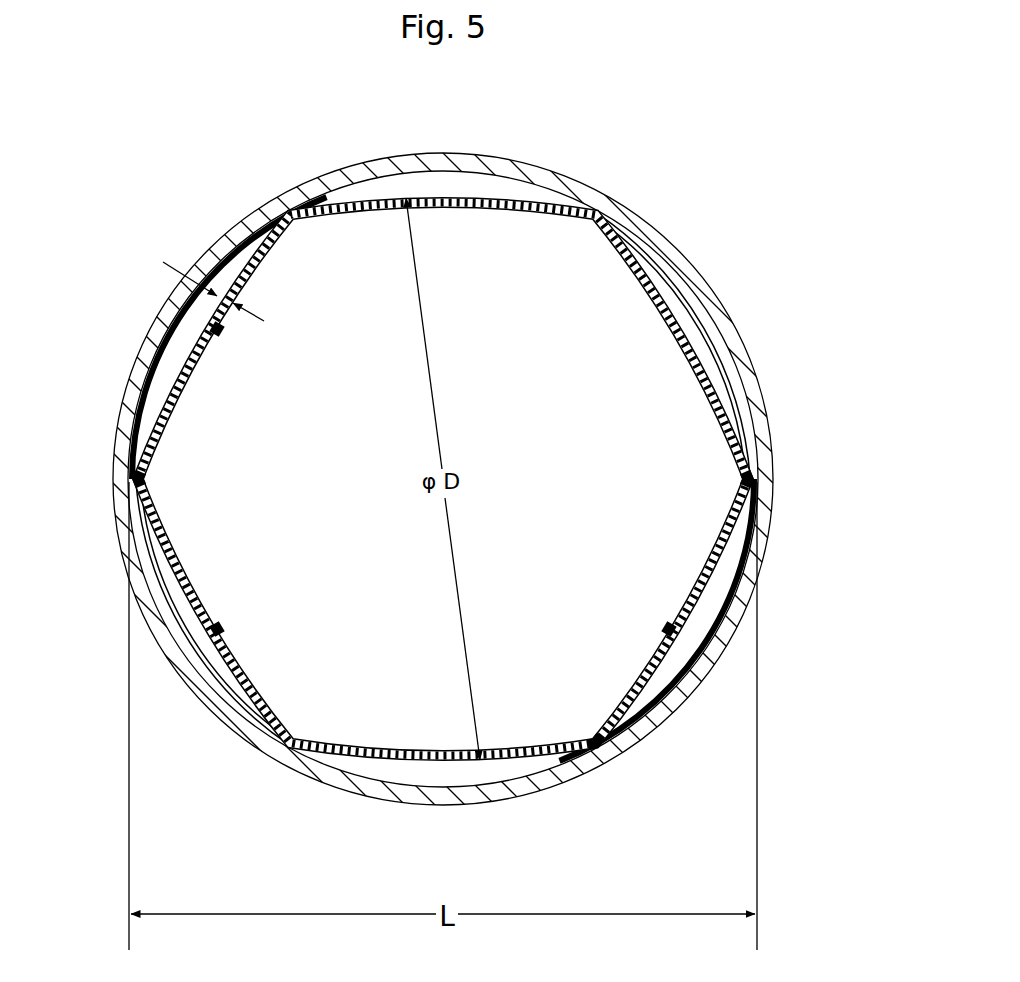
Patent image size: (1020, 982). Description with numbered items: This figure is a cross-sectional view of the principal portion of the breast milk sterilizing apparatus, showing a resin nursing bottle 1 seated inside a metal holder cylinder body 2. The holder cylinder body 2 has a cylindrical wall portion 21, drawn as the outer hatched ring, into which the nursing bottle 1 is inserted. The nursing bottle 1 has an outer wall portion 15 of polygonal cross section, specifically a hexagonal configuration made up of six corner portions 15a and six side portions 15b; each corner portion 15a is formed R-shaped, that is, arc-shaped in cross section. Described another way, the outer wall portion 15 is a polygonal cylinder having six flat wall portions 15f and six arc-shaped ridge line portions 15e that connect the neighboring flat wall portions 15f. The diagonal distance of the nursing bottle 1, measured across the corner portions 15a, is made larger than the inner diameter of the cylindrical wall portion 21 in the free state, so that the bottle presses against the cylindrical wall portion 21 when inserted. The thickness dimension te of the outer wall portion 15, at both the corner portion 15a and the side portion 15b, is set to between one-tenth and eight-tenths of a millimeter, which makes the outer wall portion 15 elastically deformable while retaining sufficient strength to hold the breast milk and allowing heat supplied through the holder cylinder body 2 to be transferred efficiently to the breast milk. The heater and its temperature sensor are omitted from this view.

The nursing bottle 1 is at (454, 460).
The holder cylinder body 2 is at (510, 485).
The cylindrical wall portion 21 is at (702, 269).
The outer wall portion 15 is at (454, 517).
The corner portion 15a is at (454, 650).
The ridge line portion 15e is at (127, 480).
The side portion 15b is at (446, 535).
The flat wall portion 15f is at (184, 360).
The thickness dimension te is at (205, 278).